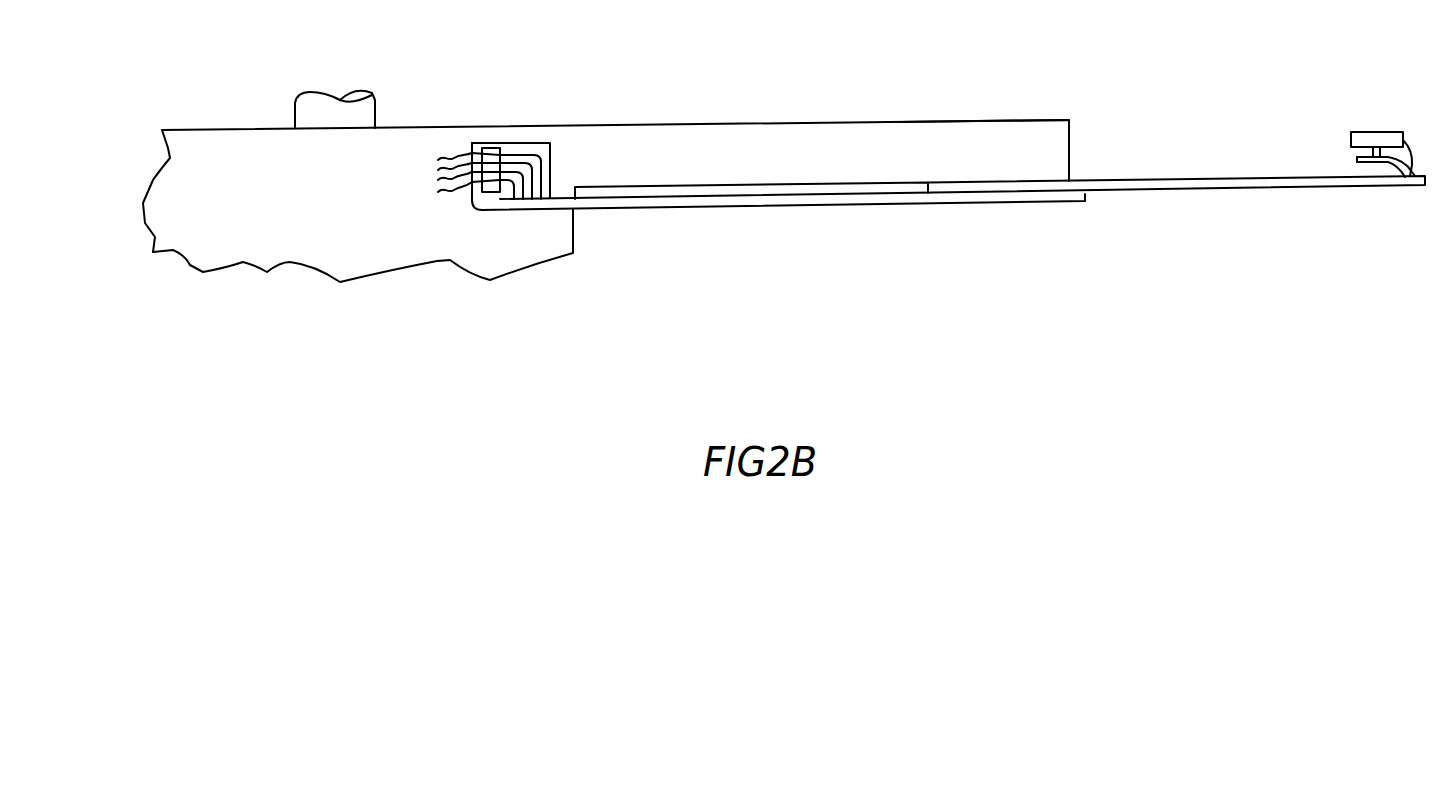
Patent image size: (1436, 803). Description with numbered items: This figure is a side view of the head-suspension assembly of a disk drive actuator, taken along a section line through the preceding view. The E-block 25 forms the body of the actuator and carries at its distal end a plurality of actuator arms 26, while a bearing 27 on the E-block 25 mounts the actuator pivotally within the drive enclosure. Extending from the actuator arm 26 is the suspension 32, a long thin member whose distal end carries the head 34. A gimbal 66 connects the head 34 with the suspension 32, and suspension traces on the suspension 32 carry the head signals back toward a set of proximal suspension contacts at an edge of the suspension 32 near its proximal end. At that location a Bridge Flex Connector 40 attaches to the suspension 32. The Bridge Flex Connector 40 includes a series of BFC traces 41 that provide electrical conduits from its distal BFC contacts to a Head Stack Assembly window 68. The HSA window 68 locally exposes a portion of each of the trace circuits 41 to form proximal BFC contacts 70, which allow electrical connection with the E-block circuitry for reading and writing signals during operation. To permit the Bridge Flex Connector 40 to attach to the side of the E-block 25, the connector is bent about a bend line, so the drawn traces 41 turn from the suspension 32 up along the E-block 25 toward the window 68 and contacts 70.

The E-block 25 is at (775, 124).
The actuator arms 26 is at (1005, 119).
The bearing 27 is at (378, 100).
The suspension 32 is at (1186, 190).
The head 34 is at (1370, 132).
The Bridge Flex Connector (BFC) 40 is at (553, 157).
The BFC traces 41 is at (483, 227).
The gimbal 66 is at (1376, 162).
The Head Stack Assembly Window (HSA window) 68 is at (488, 165).
The proximal BFC contacts 70 is at (454, 172).